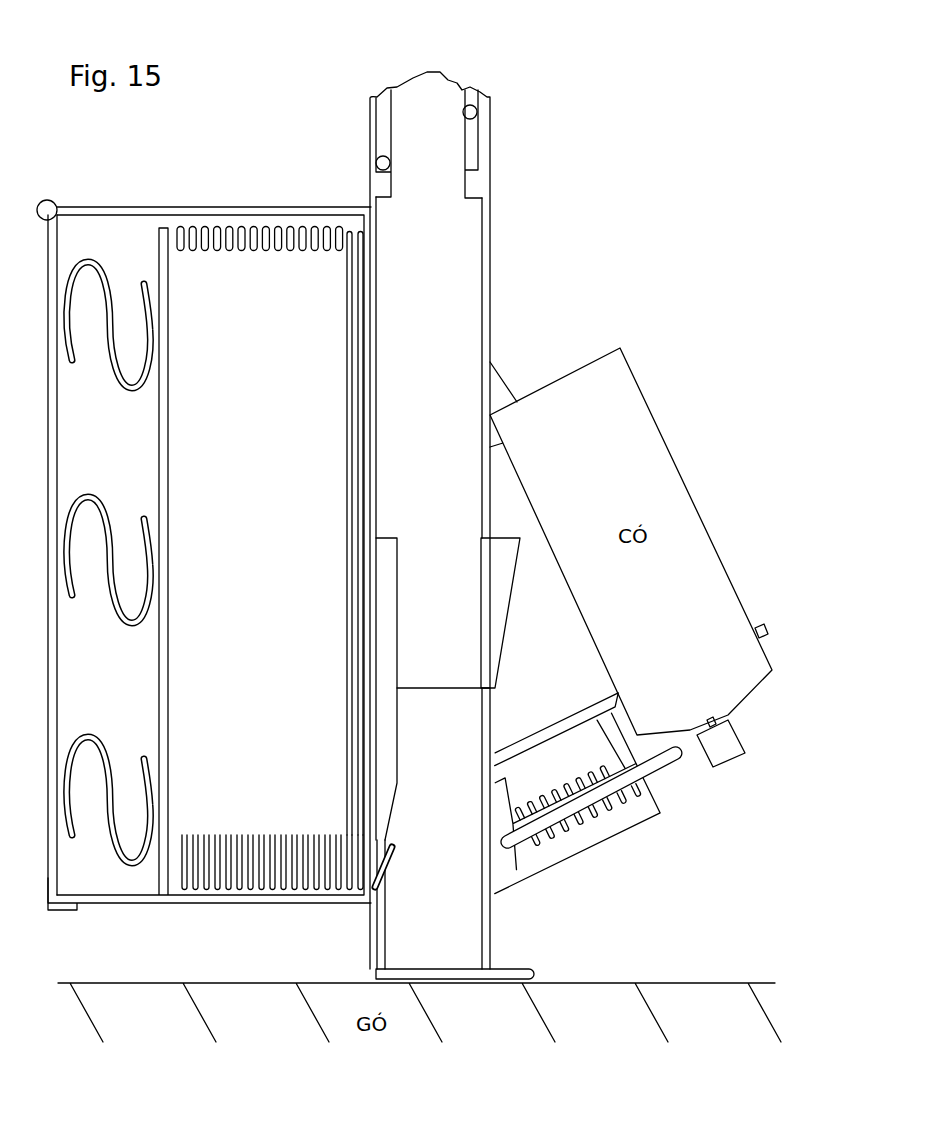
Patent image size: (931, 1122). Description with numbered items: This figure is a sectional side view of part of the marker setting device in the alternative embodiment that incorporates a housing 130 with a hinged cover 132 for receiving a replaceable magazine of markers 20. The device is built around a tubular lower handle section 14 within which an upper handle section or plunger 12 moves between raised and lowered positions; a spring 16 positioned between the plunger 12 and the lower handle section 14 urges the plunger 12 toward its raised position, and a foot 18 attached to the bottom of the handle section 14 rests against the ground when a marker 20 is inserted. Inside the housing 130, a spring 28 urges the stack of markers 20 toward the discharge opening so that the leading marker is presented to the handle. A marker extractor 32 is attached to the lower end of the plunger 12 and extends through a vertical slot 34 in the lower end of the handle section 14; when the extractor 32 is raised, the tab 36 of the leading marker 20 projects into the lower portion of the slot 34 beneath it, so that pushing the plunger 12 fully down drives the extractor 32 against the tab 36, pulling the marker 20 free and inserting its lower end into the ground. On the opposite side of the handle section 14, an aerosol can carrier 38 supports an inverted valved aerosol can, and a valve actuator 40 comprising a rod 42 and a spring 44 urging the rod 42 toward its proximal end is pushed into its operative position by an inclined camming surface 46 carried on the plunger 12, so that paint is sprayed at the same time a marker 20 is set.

The plunger 12 is at (397, 222).
The lower handle section 14 is at (485, 266).
The spring 16 is at (469, 108).
The foot 18 is at (535, 967).
The marker 20 is at (353, 584).
The spring 28 is at (115, 606).
The marker extractor 32 is at (384, 584).
The vertical slot 34 is at (380, 929).
The tab 36 is at (386, 857).
The aerosol can carrier 38 is at (758, 628).
The valve actuator 40 is at (651, 840).
The rod 42 is at (667, 763).
The spring 44 is at (545, 833).
The camming surface 46 is at (498, 595).
The housing 130 is at (233, 207).
The hinged cover 132 is at (57, 415).